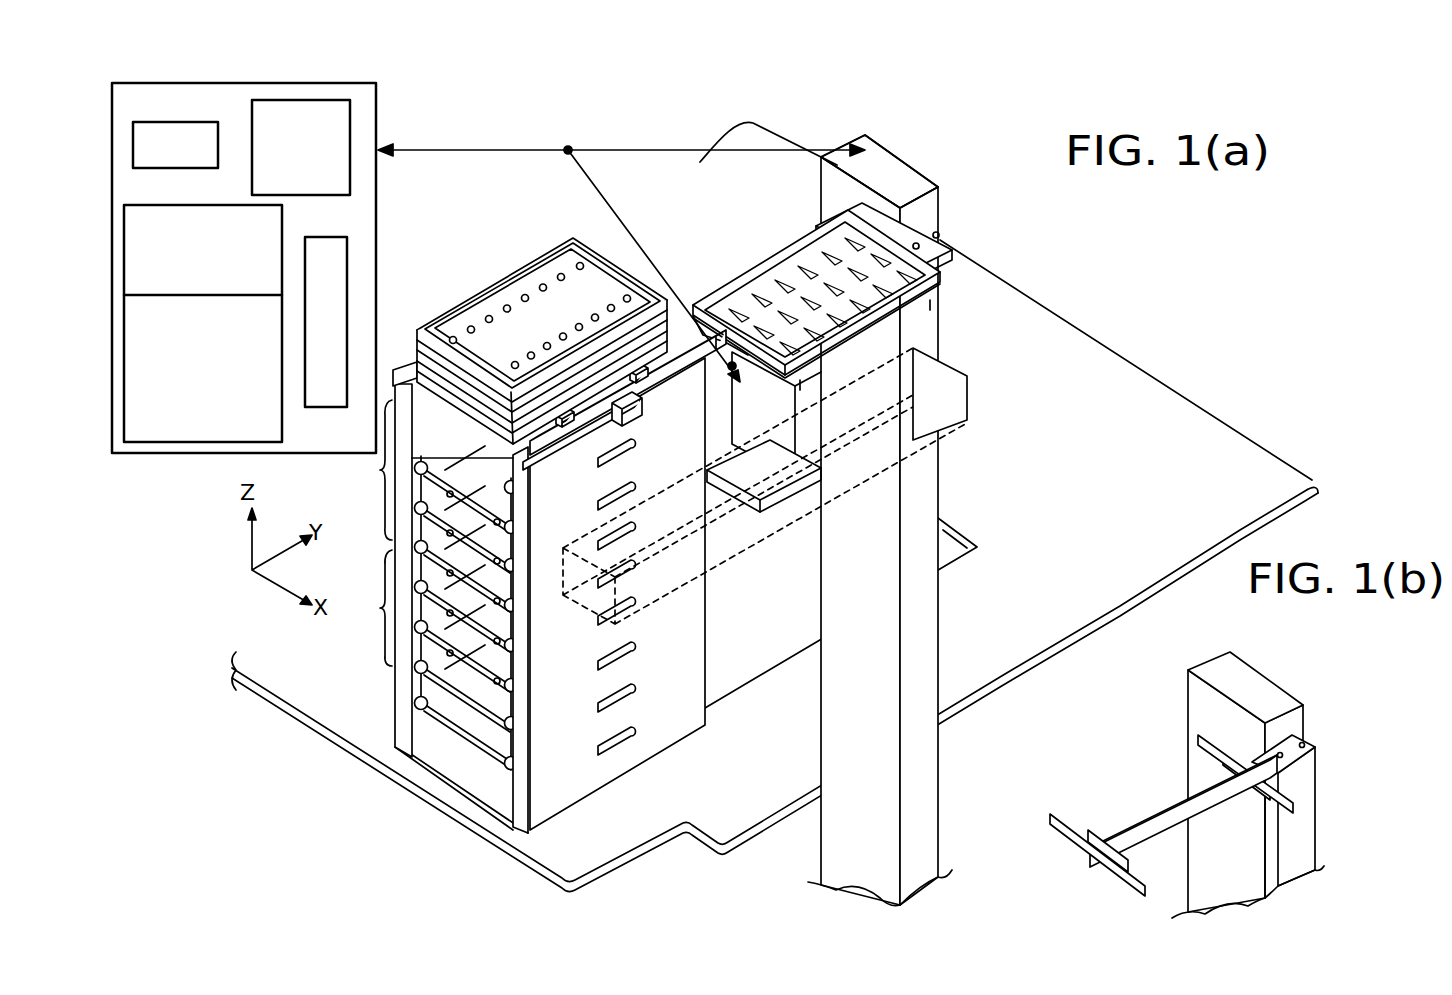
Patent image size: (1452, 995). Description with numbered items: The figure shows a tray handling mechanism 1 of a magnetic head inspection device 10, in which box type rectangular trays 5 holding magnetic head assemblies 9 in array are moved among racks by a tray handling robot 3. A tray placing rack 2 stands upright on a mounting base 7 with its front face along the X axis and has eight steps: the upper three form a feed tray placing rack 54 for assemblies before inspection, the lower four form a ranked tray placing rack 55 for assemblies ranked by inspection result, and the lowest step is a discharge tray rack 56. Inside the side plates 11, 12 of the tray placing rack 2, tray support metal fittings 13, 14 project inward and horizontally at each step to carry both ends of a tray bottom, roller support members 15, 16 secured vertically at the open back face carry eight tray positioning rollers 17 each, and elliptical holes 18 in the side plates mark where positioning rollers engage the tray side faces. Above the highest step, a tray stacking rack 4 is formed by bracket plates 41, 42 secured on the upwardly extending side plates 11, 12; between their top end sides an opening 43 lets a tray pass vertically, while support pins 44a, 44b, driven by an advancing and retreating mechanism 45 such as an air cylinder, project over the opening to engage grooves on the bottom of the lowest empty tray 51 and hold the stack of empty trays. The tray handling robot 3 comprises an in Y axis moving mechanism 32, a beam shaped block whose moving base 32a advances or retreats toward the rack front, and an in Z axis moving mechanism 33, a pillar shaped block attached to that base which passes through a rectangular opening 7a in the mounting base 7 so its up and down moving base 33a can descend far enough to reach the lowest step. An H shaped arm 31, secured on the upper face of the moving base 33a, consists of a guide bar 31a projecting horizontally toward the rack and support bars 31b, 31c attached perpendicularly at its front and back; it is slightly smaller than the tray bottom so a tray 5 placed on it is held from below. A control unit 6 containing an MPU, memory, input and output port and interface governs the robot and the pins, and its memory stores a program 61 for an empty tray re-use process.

In FIG. 1a, the tray handling mechanism 1 is at (967, 317).
In FIG. 1a, the tray placing rack 2 is at (474, 594).
In FIG. 1a, the tray handling robot 3 is at (923, 160).
In FIG. 1b, the tray handling robot 3 is at (1230, 756).
In FIG. 1a, the tray stacking rack 4 is at (542, 311).
In FIG. 1a, the tray 5 is at (867, 300).
In FIG. 1a, the control unit 6 is at (378, 98).
In FIG. 1a, the mounting base 7 is at (1182, 412).
In FIG. 1a, the rectangular opening 7a is at (772, 663).
In FIG. 1a, the magnetic head assemblies 9 is at (815, 243).
In FIG. 1a, the magnetic head inspection device 10 is at (655, 133).
In FIG. 1a, the side plate 11 is at (658, 726).
In FIG. 1a, the side plate 12 is at (396, 676).
In FIG. 1a, the tray support metal fitting 13 is at (414, 547).
In FIG. 1a, the tray support metal fitting 14 is at (461, 602).
In FIG. 1a, the roller support member 15 is at (513, 800).
In FIG. 1a, the roller support member 16 is at (408, 702).
In FIG. 1a, the tray positioning roller 17 is at (517, 570).
In FIG. 1a, the elliptical hole 18 is at (630, 652).
In FIG. 1a, the H shaped arm 31 is at (945, 222).
In FIG. 1b, the H shaped arm 31 is at (1220, 818).
In FIG. 1b, the guide bar 31a is at (1175, 812).
In FIG. 1b, the support bar 31b is at (1305, 772).
In FIG. 1b, the support bar 31c is at (1118, 878).
In FIG. 1a, the in Y axis moving mechanism 32 is at (968, 398).
In FIG. 1a, the moving base 32a is at (764, 448).
In FIG. 1a, the in Z axis moving mechanism 33 is at (895, 168).
In FIG. 1b, the in Z axis moving mechanism 33 is at (1215, 665).
In FIG. 1a, the up and down moving base 33a is at (940, 302).
In FIG. 1b, the up and down moving base 33a is at (1302, 830).
In FIG. 1a, the bracket plate 41 is at (547, 457).
In FIG. 1a, the bracket plate 42 is at (402, 370).
In FIG. 1a, the opening 43 is at (468, 466).
In FIG. 1a, the support pin 44a is at (560, 410).
In FIG. 1a, the support pin 44b is at (638, 366).
In FIG. 1a, the advancing and retreating mechanism 45 is at (630, 428).
In FIG. 1a, the empty tray 51 is at (597, 280).
In FIG. 1a, the feed tray placing rack 54 is at (368, 470).
In FIG. 1a, the ranked tray placing rack 55 is at (368, 608).
In FIG. 1a, the discharge tray rack 56 is at (385, 692).
In FIG. 1a, the PRG (program) 61 is at (140, 455).